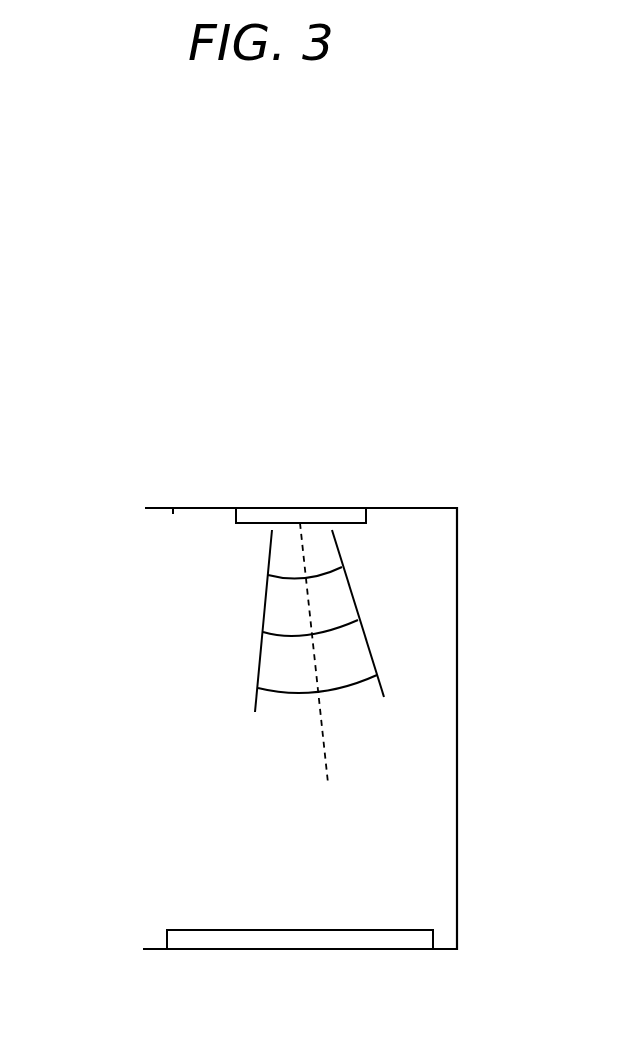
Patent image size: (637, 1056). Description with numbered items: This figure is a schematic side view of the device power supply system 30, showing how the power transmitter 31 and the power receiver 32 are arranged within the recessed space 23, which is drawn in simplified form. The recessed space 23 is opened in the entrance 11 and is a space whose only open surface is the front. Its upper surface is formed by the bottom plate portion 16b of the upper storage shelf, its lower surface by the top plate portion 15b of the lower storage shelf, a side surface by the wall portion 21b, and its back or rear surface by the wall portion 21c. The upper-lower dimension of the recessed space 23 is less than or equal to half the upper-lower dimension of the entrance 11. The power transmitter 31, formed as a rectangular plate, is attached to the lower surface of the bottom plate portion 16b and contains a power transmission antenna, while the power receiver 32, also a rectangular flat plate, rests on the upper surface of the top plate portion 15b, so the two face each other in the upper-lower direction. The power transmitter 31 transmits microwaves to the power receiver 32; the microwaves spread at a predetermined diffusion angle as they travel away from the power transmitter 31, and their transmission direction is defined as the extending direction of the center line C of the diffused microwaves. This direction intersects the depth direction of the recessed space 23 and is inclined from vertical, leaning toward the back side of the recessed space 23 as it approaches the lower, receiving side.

The device power supply system 30 is at (437, 477).
The power transmitter 31 is at (323, 513).
The power receiver 32 is at (342, 942).
The bottom plate portion 16b is at (173, 514).
The top plate portion 15b is at (215, 946).
The recessed space 23 is at (284, 764).
The center line C is at (325, 760).
The entrance 11 is at (93, 707).
The wall portion 21b is at (212, 723).
The wall portion 21c is at (455, 879).